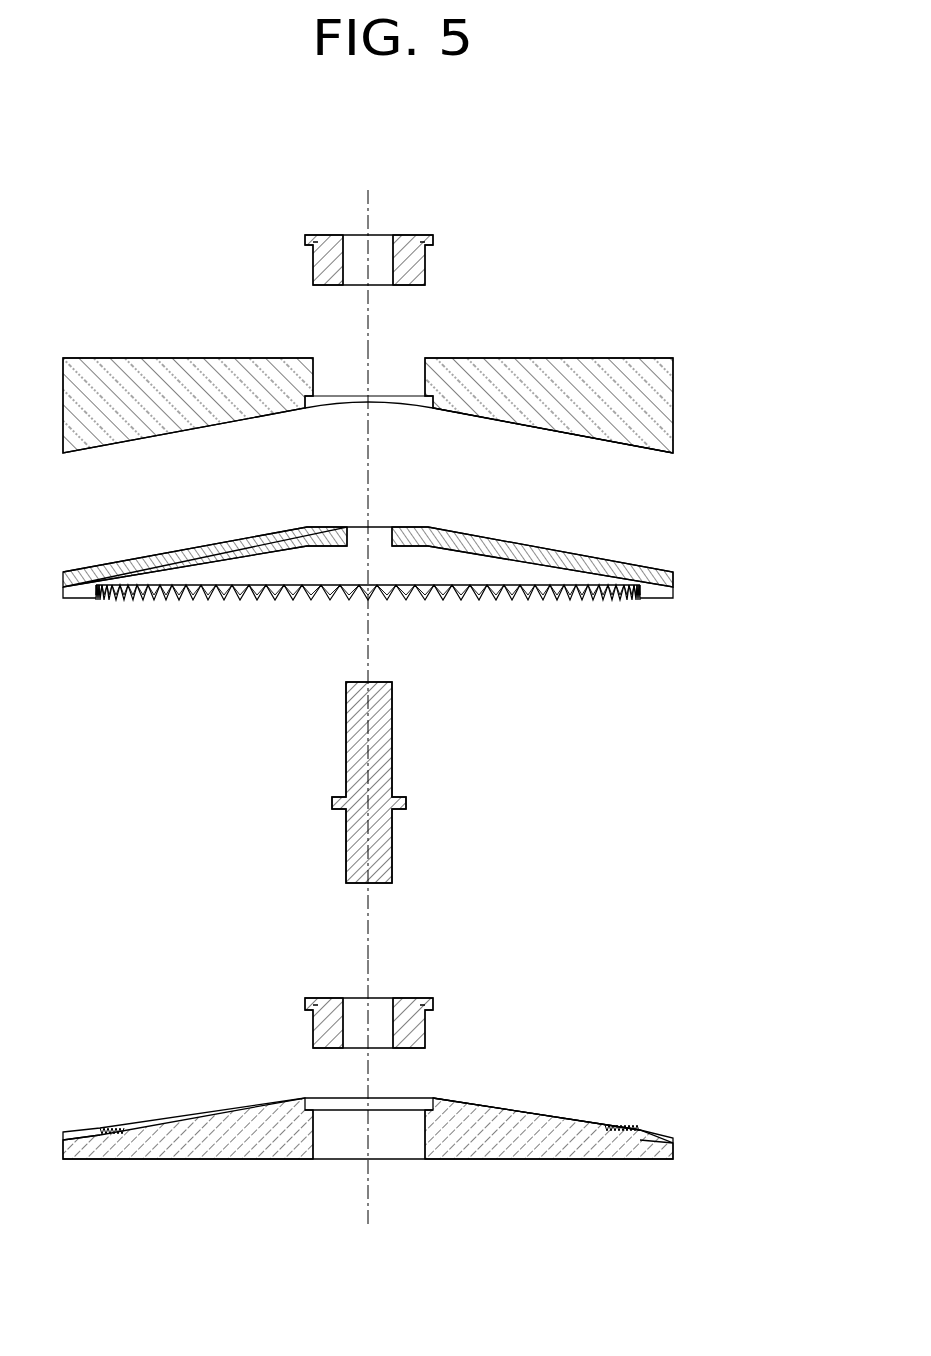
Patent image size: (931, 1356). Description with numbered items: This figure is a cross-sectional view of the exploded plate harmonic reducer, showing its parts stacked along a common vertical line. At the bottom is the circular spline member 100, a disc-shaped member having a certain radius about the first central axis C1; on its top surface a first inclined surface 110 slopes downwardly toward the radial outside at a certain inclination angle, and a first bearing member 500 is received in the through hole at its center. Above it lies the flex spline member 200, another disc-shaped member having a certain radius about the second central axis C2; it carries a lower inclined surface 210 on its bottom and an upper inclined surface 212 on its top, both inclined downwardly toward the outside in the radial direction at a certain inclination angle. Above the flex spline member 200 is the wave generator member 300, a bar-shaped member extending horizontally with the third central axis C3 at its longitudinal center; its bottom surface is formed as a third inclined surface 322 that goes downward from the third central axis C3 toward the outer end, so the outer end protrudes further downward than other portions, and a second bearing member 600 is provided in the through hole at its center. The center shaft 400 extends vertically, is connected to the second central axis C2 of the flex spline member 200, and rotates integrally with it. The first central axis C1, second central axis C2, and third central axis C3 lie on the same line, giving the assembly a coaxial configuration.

The circular spline member 100 is at (437, 1102).
The first inclined surface 110 is at (518, 1112).
The flex spline member 200 is at (431, 571).
The (2-1)-th inclined surface 210 is at (550, 568).
The (2-2)-th inclined surface 212 is at (580, 555).
The wave generator member 300 is at (687, 406).
The third inclined surface 322 is at (515, 424).
The center shaft 400 is at (420, 762).
The first bearing member 500 is at (449, 247).
The second bearing member 600 is at (452, 1009).
The first central axis C1 is at (377, 1193).
The second central axis C2 is at (377, 642).
The third central axis C3 is at (377, 322).